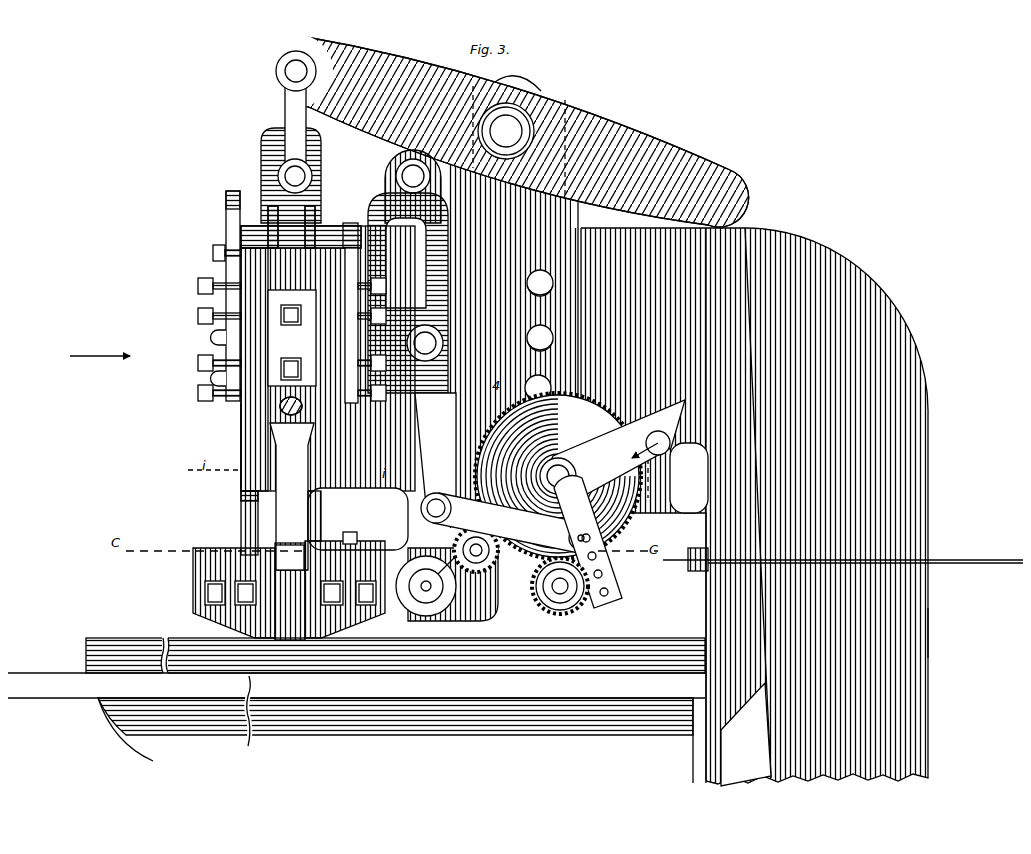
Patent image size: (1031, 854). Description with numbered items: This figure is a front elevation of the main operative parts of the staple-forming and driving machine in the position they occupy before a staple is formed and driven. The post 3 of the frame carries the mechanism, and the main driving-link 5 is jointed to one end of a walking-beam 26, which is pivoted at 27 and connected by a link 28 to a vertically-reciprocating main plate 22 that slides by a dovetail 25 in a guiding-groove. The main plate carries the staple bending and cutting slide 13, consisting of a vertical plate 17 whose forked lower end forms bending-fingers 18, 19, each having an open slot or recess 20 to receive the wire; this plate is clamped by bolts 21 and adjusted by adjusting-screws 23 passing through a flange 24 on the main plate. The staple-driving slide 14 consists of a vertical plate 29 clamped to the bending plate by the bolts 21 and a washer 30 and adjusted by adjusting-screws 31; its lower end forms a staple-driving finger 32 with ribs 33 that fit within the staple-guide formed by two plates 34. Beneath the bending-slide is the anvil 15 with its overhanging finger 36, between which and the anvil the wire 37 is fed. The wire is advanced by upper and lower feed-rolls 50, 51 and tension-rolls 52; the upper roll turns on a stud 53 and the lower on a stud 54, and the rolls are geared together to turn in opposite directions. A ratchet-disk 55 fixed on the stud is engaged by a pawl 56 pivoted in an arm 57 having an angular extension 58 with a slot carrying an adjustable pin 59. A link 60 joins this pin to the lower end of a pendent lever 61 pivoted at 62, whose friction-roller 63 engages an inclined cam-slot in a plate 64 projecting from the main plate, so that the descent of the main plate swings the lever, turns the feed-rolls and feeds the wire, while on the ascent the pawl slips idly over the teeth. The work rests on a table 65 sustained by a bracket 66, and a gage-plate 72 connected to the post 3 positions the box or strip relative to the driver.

The post 3 is at (918, 615).
The main driving-link 5 is at (688, 467).
The staple bending and cutting slide 13 is at (233, 408).
The staple-driving slide 14 is at (292, 496).
The anvil 15 is at (230, 556).
The vertical plate 17 is at (226, 235).
The bending-finger 18 is at (250, 452).
The bending-finger 19 is at (358, 519).
The open slot or recess 20 is at (250, 250).
The bolts 21 is at (396, 526).
The main plate 22 is at (312, 226).
The adjusting-screws 23 is at (190, 308).
The flange 24 is at (205, 245).
The dovetail 25 is at (233, 493).
The walking-beam 26 is at (590, 120).
The pivot 27 is at (506, 131).
The link 28 is at (300, 128).
The vertical plate 29 is at (190, 328).
The washer 30 is at (292, 338).
The adjusting-screws 31 is at (190, 278).
The staple-driving finger 32 is at (294, 521).
The ribs 33 is at (265, 503).
The plates 34 is at (317, 589).
The overhanging finger 36 is at (300, 540).
The wire 37 is at (940, 552).
The upper feed-roll 50 is at (617, 510).
The lower feed-roll 51 is at (571, 597).
The tension-rolls 52 is at (480, 560).
The stud 53 is at (612, 450).
The stud 54 is at (528, 598).
The ratchet-disk 55 is at (558, 476).
The pawl 56 is at (640, 478).
The arm 57 is at (664, 467).
The angular extension 58 is at (603, 580).
The pin 59 is at (624, 528).
The link 60 is at (507, 523).
The pendent lever 61 is at (435, 449).
The pivot 62 is at (400, 168).
The friction-roller 63 is at (519, 330).
The plate 64 is at (365, 224).
The table 65 is at (356, 685).
The bracket 66 is at (395, 729).
The gage-plate 72 is at (395, 655).